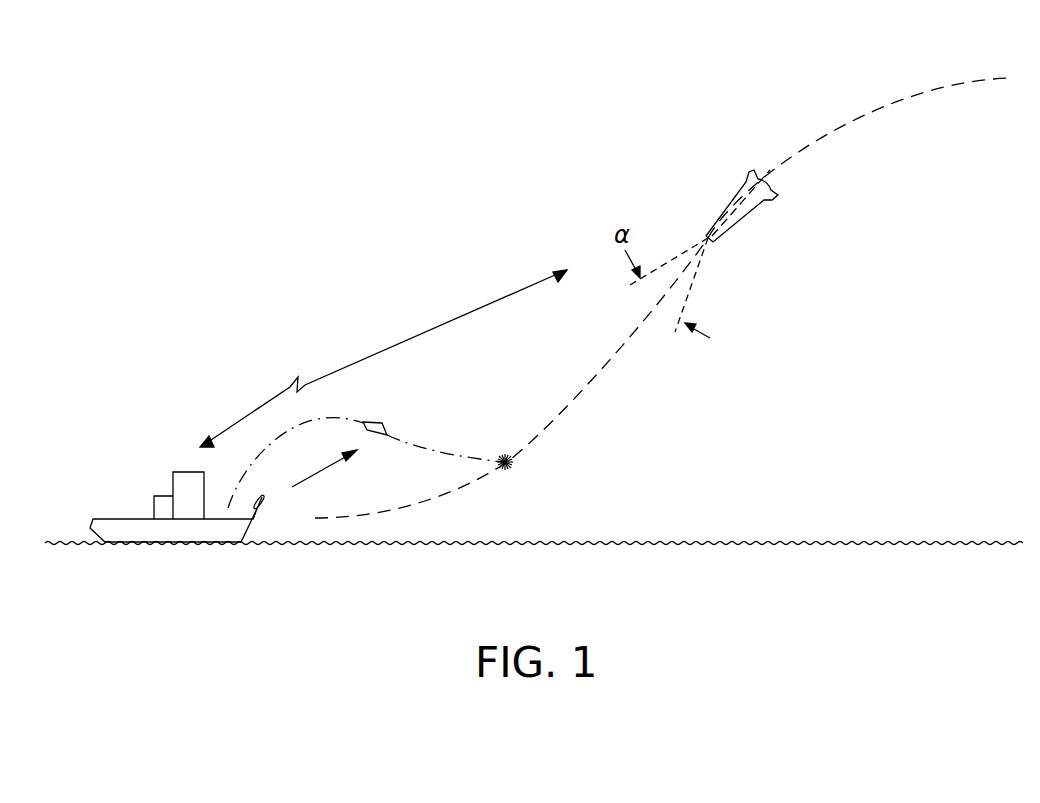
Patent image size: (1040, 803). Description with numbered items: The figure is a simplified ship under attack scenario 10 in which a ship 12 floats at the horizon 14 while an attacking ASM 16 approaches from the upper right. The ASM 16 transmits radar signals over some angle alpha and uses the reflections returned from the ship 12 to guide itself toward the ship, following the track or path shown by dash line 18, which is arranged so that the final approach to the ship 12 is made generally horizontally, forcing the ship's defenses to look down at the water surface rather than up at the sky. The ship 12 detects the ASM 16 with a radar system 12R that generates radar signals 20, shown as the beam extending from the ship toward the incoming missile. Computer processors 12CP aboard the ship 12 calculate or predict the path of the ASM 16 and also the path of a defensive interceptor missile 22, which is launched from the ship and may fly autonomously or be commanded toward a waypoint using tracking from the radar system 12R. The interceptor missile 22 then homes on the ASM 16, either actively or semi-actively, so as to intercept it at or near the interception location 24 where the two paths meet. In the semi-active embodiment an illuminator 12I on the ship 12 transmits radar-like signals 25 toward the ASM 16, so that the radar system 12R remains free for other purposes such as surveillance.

The ship under attack scenario 10 is at (459, 600).
The ship 12 is at (118, 518).
The radar system 12R is at (173, 472).
The computer processors 12CP is at (185, 483).
The illuminator 12I is at (262, 500).
The horizon 14 is at (743, 543).
The attacking ASM 16 is at (732, 205).
The track or path 18 is at (452, 492).
The radar signals 20 is at (417, 333).
The interceptor missile 22 is at (377, 421).
The interception location 24 is at (513, 468).
The radar-like signals 25 is at (317, 476).